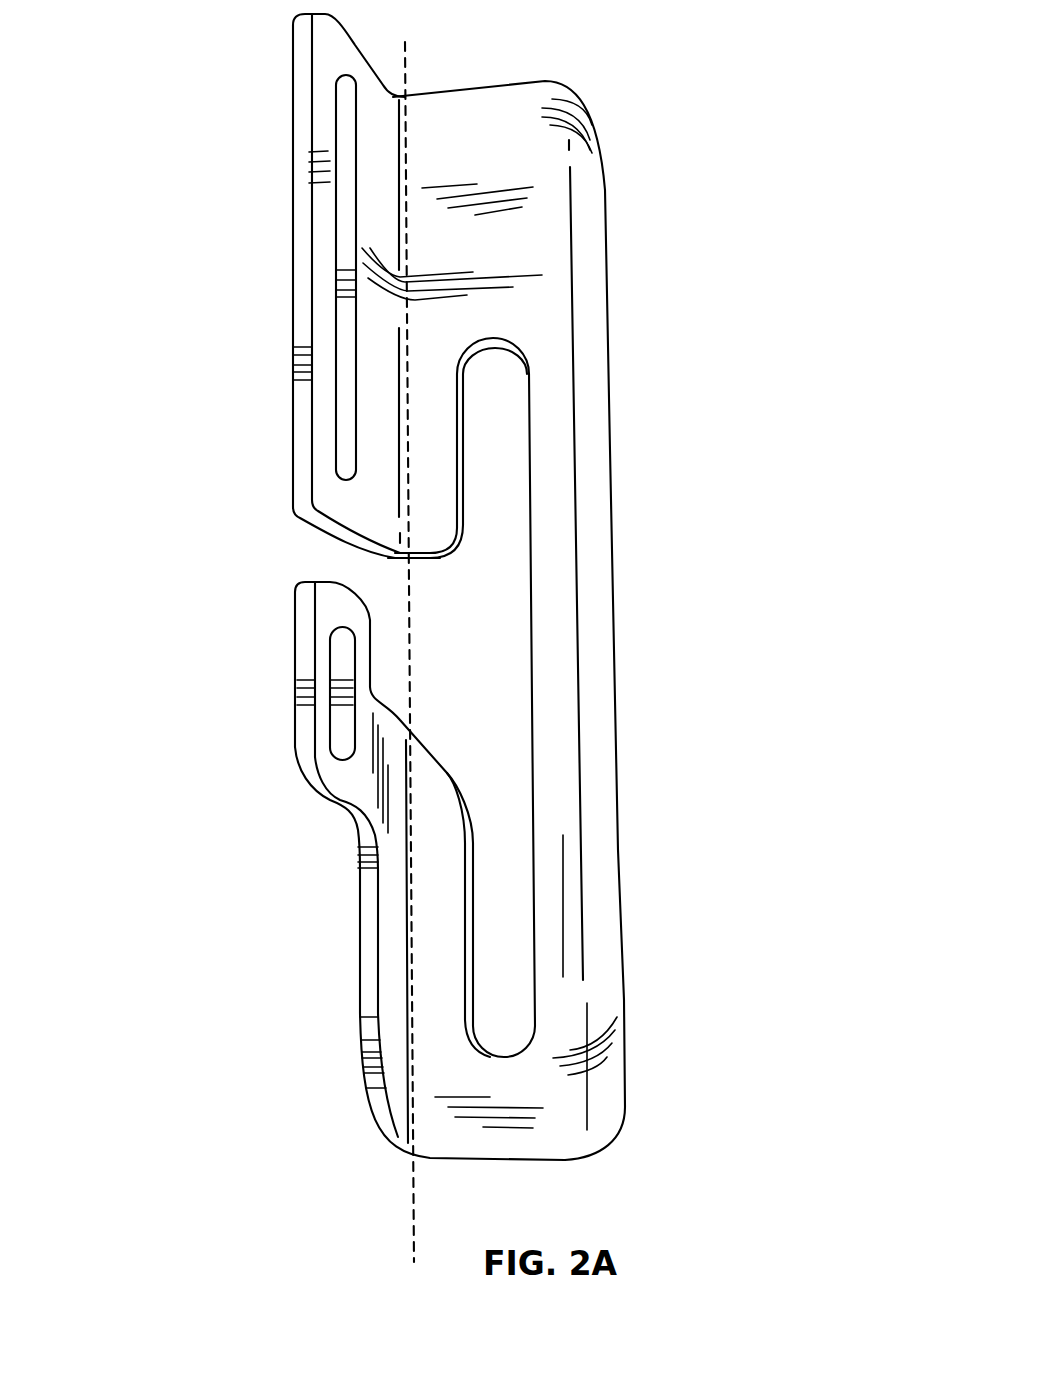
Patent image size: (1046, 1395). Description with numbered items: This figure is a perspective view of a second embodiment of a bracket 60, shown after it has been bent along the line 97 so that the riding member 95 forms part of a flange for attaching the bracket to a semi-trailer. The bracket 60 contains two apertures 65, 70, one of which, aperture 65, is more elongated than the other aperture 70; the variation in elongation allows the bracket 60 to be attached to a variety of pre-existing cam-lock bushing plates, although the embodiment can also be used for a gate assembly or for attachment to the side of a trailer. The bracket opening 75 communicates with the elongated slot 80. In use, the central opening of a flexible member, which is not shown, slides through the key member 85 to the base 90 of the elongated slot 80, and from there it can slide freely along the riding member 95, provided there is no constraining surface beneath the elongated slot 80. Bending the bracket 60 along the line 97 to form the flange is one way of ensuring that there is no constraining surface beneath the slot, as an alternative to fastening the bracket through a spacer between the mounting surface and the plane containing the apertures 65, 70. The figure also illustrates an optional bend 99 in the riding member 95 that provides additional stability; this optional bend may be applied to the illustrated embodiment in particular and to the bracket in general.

The bracket 60 is at (458, 638).
The aperture 65 is at (350, 383).
The aperture 70 is at (337, 700).
The bracket opening 75 is at (295, 555).
The elongated slot 80 is at (485, 372).
The key member 85 is at (335, 778).
The base 90 is at (515, 1030).
The riding member 95 is at (566, 501).
The line 97 is at (397, 1208).
The bend 99 is at (603, 195).